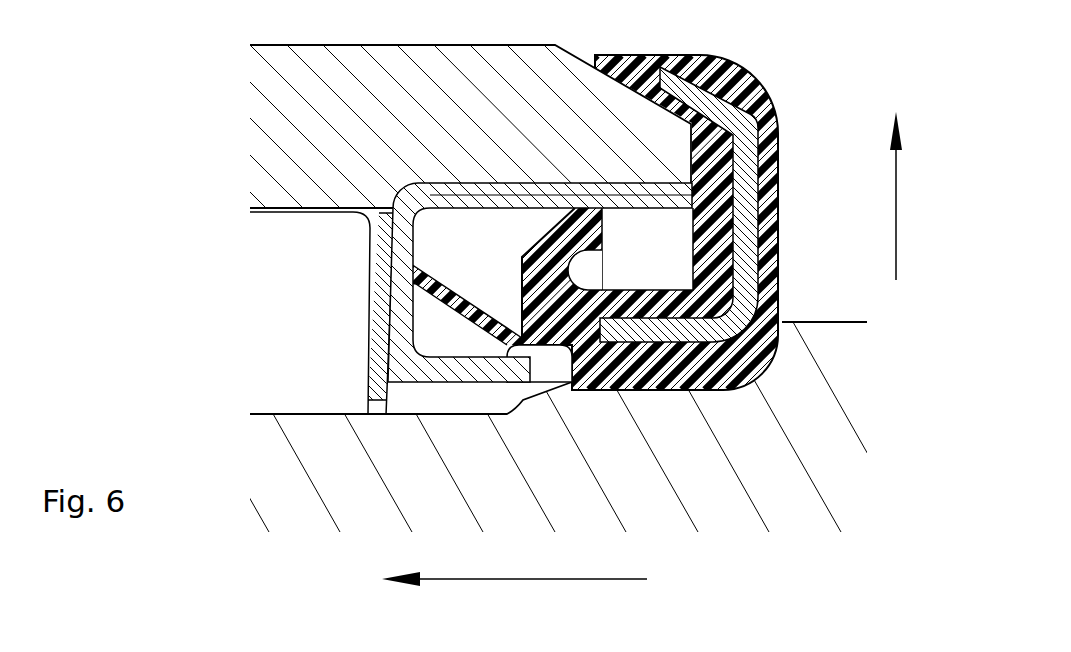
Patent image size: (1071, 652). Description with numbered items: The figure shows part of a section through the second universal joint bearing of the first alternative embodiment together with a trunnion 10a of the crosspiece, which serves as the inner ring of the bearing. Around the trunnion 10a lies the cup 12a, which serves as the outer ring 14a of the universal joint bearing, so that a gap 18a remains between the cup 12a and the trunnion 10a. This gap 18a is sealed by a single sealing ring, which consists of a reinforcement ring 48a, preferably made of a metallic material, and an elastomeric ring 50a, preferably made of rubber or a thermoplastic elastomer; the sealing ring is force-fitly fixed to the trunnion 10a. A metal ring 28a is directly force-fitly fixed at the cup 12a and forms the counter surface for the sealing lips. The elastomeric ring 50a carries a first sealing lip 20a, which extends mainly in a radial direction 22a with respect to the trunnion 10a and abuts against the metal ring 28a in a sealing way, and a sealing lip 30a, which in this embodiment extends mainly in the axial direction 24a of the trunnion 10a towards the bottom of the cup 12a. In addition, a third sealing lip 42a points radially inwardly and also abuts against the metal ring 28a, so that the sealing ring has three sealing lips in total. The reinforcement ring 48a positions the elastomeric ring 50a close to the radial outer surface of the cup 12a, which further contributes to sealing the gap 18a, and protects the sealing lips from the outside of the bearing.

The trunnion 10a is at (732, 480).
The cup 12a is at (393, 126).
The outer ring 14a is at (262, 121).
The gap 18a is at (573, 195).
The first sealing lip 20a is at (572, 252).
The radial direction 22a is at (867, 196).
The axial direction 24a is at (514, 560).
The metal ring 28a is at (455, 199).
The sealing lip 30a is at (473, 277).
The third sealing lip 42a is at (370, 388).
The reinforcement ring 48a is at (723, 97).
The elastomeric ring 50a is at (703, 54).